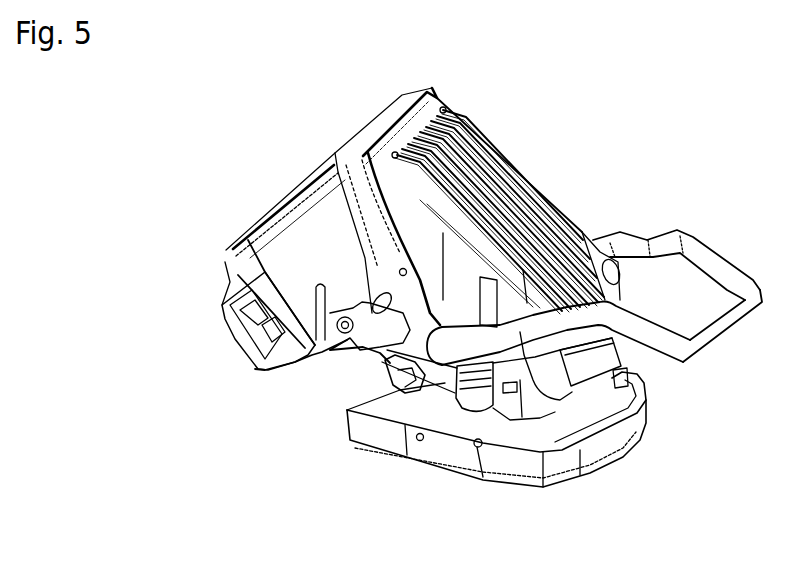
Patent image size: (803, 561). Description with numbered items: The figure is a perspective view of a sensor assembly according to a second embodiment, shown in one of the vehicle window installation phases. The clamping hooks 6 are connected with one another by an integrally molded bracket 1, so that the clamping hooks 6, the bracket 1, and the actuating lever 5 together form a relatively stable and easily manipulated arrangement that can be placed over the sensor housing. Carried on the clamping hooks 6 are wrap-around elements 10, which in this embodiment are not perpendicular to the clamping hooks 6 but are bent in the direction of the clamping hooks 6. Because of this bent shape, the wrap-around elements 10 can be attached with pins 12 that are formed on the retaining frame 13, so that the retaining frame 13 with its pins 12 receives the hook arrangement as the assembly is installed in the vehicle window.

The bracket 1 is at (362, 193).
The actuating lever 5 is at (650, 240).
The clamping hooks 6 is at (405, 354).
The wrap-around elements 10 is at (467, 413).
The pins 12 is at (480, 443).
The retaining frame 13 is at (590, 445).